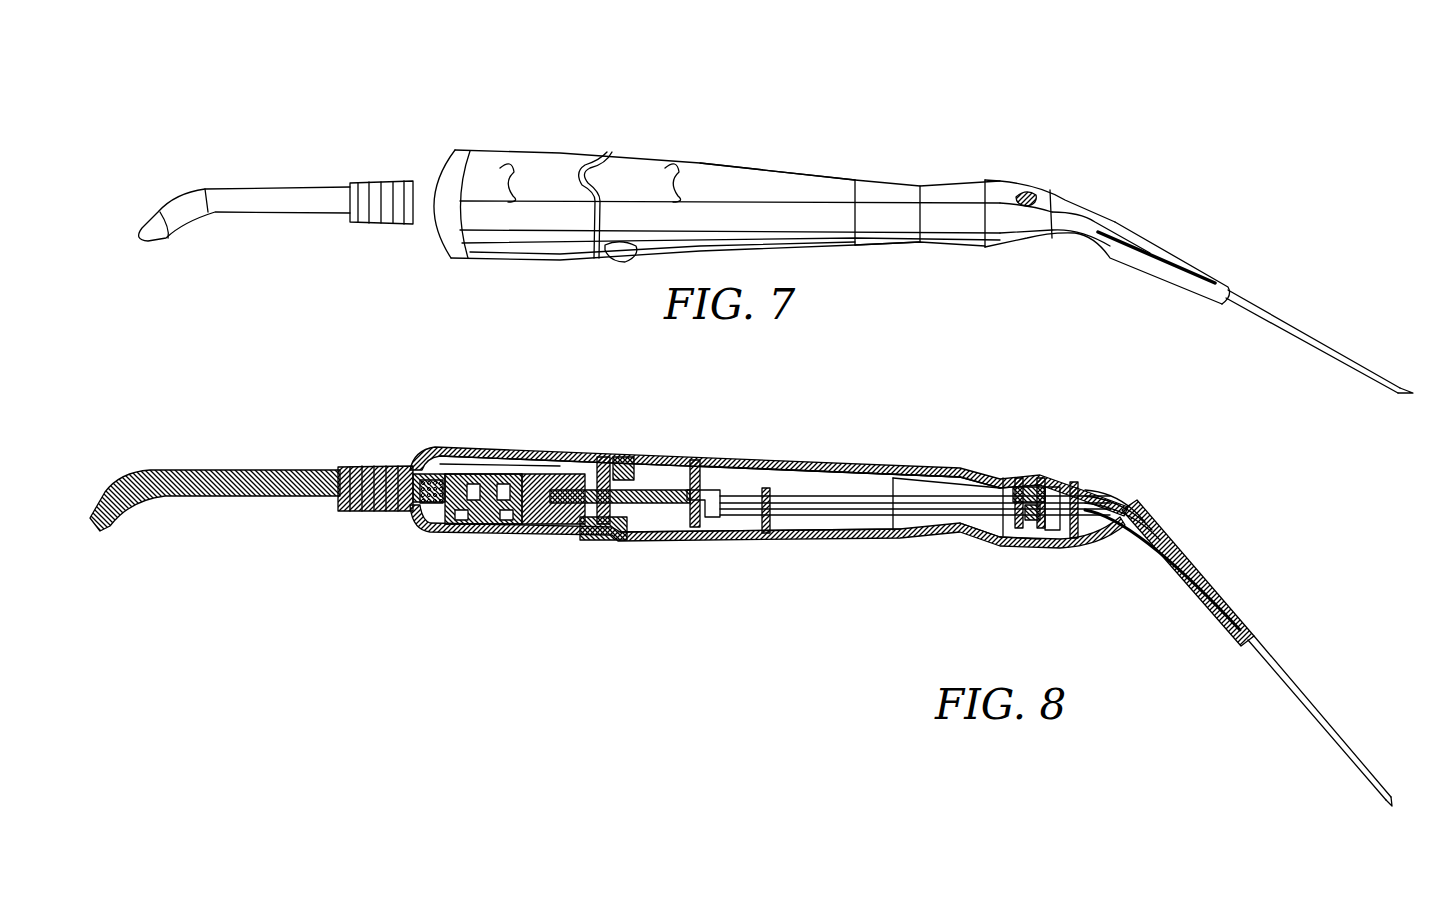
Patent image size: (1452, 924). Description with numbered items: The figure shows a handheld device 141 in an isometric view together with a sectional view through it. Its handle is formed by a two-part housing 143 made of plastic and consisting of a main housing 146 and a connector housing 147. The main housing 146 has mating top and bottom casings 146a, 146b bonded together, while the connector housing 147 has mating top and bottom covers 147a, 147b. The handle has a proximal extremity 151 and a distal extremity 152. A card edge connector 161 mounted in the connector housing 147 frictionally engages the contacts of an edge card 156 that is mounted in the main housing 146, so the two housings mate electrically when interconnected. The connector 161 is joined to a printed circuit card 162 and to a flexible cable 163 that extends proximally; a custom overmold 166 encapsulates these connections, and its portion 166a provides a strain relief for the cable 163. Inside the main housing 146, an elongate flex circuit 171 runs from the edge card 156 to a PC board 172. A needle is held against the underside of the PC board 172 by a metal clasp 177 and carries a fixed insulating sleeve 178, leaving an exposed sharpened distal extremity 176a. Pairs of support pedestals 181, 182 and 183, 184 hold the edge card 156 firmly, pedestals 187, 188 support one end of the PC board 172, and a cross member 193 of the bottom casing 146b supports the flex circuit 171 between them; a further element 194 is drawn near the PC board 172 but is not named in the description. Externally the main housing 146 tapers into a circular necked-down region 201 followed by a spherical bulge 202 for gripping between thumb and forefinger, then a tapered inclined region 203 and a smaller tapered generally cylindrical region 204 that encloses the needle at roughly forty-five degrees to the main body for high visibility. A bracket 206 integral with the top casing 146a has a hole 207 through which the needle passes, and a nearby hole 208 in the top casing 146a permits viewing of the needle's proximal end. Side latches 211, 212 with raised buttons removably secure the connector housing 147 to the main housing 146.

In FIG. 7, the device 141 is at (278, 118).
In FIG. 7, the two-part housing 143 is at (720, 147).
In FIG. 7, the main housing 146 is at (819, 170).
In FIG. 7, the top casing 146a is at (880, 190).
In FIG. 8, the top casing 146a is at (810, 468).
In FIG. 7, the bottom casing 146b is at (880, 250).
In FIG. 8, the bottom casing 146b is at (745, 540).
In FIG. 7, the connector housing 147 is at (573, 146).
In FIG. 7, the top cover 147a is at (498, 162).
In FIG. 8, the top cover 147a is at (479, 452).
In FIG. 7, the bottom cover 147b is at (489, 262).
In FIG. 8, the bottom cover 147b is at (468, 540).
In FIG. 8, the proximal extremity 151 is at (422, 450).
In FIG. 8, the distal extremity 152 is at (1145, 525).
In FIG. 8, the edge card 156 is at (666, 470).
In FIG. 8, the card edge connector 161 is at (540, 470).
In FIG. 8, the printed circuit card 162 is at (517, 540).
In FIG. 8, the flexible cable 163 is at (232, 493).
In FIG. 8, the custom overmold 166 is at (435, 543).
In FIG. 8, the strain relief portion 166a is at (360, 512).
In FIG. 8, the elongate flex circuit 171 is at (835, 512).
In FIG. 8, the PC board 172 is at (1018, 478).
In FIG. 7, the exposed sharpened distal extremity 176a is at (1380, 385).
In FIG. 8, the exposed sharpened distal extremity 176a is at (1367, 785).
In FIG. 8, the metal clasp 177 is at (1022, 545).
In FIG. 7, the fixed insulating sleeve 178 is at (1265, 315).
In FIG. 8, the fixed insulating sleeve 178 is at (1307, 706).
In FIG. 8, the support pedestal 181 is at (612, 456).
In FIG. 8, the support pedestal 182 is at (575, 527).
In FIG. 8, the support pedestal 183 is at (720, 468).
In FIG. 8, the support pedestal 184 is at (710, 525).
In FIG. 8, the support pedestal 187 is at (990, 480).
In FIG. 8, the support pedestal 188 is at (985, 540).
In FIG. 8, the cross member 193 is at (1068, 488).
In FIG. 8, the seal 194 is at (1042, 545).
In FIG. 7, the necked-down region 201 is at (918, 194).
In FIG. 8, the necked-down region 201 is at (915, 478).
In FIG. 7, the spherical bulge 202 is at (1005, 188).
In FIG. 8, the spherical bulge 202 is at (1036, 480).
In FIG. 7, the tapered inclined region 203 is at (1075, 210).
In FIG. 8, the tapered inclined region 203 is at (1135, 508).
In FIG. 7, the tapered generally cylindrical region 204 is at (1180, 256).
In FIG. 8, the tapered generally cylindrical region 204 is at (1218, 585).
In FIG. 8, the bracket 206 is at (1076, 545).
In FIG. 8, the hole 207 is at (1108, 494).
In FIG. 7, the hole 208 is at (1040, 200).
In FIG. 8, the hole 208 is at (1100, 486).
In FIG. 7, the side latch 211 is at (622, 262).
In FIG. 7, the side latch 212 is at (649, 148).